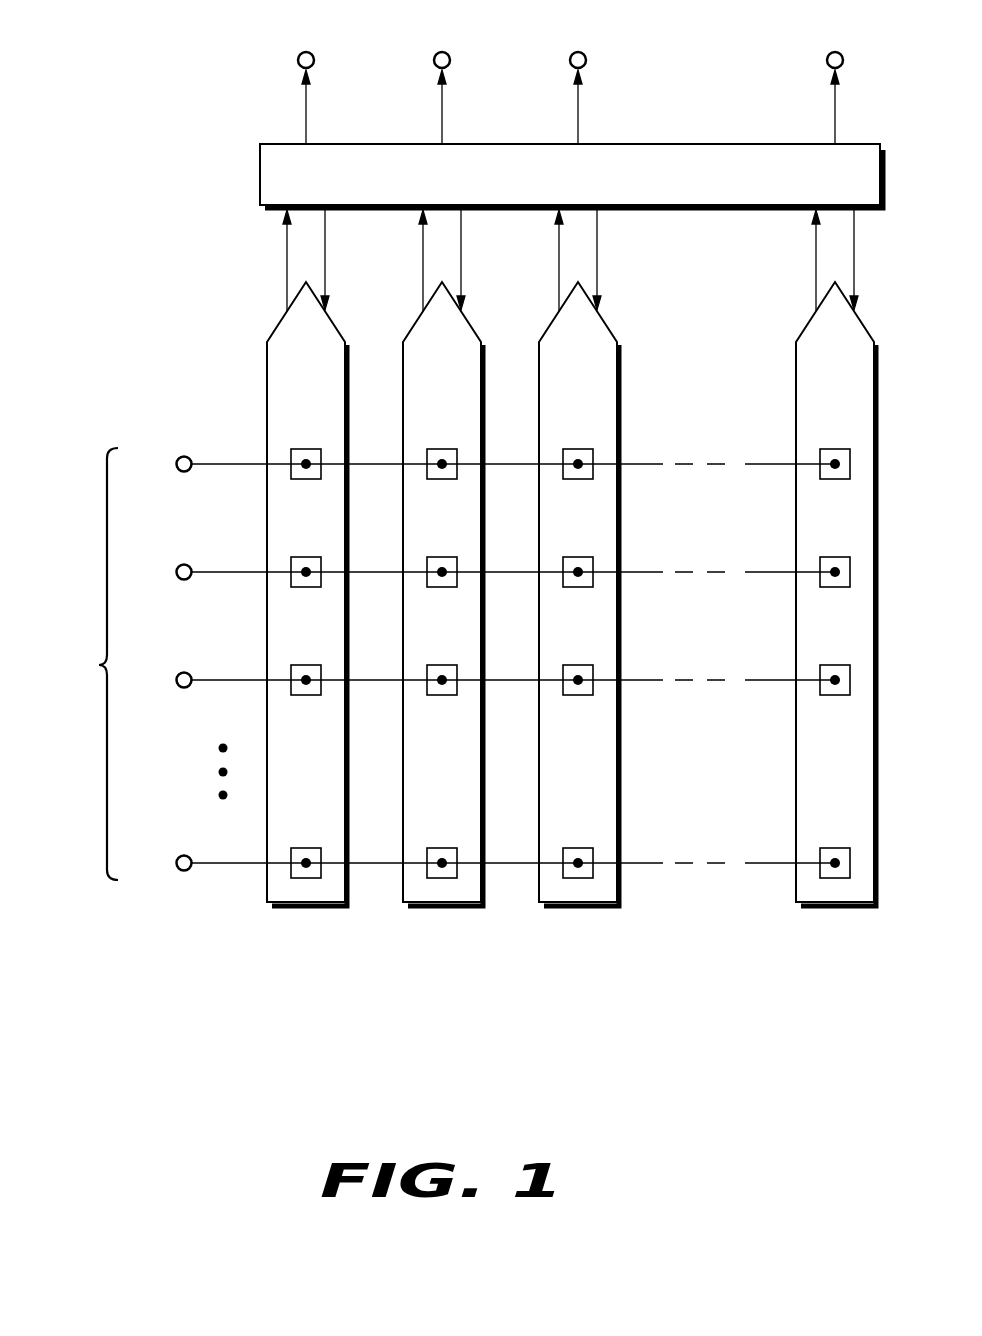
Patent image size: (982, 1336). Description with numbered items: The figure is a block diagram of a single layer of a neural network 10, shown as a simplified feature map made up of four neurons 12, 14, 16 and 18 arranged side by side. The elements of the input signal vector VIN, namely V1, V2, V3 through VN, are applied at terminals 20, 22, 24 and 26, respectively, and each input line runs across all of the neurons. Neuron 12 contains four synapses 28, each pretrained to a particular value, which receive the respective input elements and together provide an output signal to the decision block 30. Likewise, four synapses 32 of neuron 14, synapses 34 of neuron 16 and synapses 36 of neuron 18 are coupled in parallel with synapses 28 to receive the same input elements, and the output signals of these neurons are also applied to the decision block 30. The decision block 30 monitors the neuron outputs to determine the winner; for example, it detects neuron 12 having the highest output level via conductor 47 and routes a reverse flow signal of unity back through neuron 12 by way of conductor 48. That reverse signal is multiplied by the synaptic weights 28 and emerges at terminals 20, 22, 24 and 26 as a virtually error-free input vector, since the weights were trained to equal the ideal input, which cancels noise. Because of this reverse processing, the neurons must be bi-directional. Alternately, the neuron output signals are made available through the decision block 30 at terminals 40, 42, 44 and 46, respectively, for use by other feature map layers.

The neural network 10 is at (525, 1035).
The neuron 12 is at (318, 909).
The neuron 14 is at (454, 909).
The neuron 16 is at (590, 909).
The neuron 18 is at (847, 909).
The terminal 20 is at (189, 458).
The terminal 22 is at (189, 566).
The terminal 24 is at (189, 674).
The terminal 26 is at (189, 857).
The synapses 28 is at (306, 449).
The decision block 30 is at (260, 165).
The synapses 32 is at (442, 449).
The synapses 34 is at (578, 449).
The synapses 36 is at (835, 449).
The terminal 40 is at (303, 53).
The terminal 42 is at (439, 53).
The terminal 44 is at (575, 53).
The terminal 46 is at (838, 53).
The conductor 47 is at (287, 253).
The conductor 48 is at (324, 253).